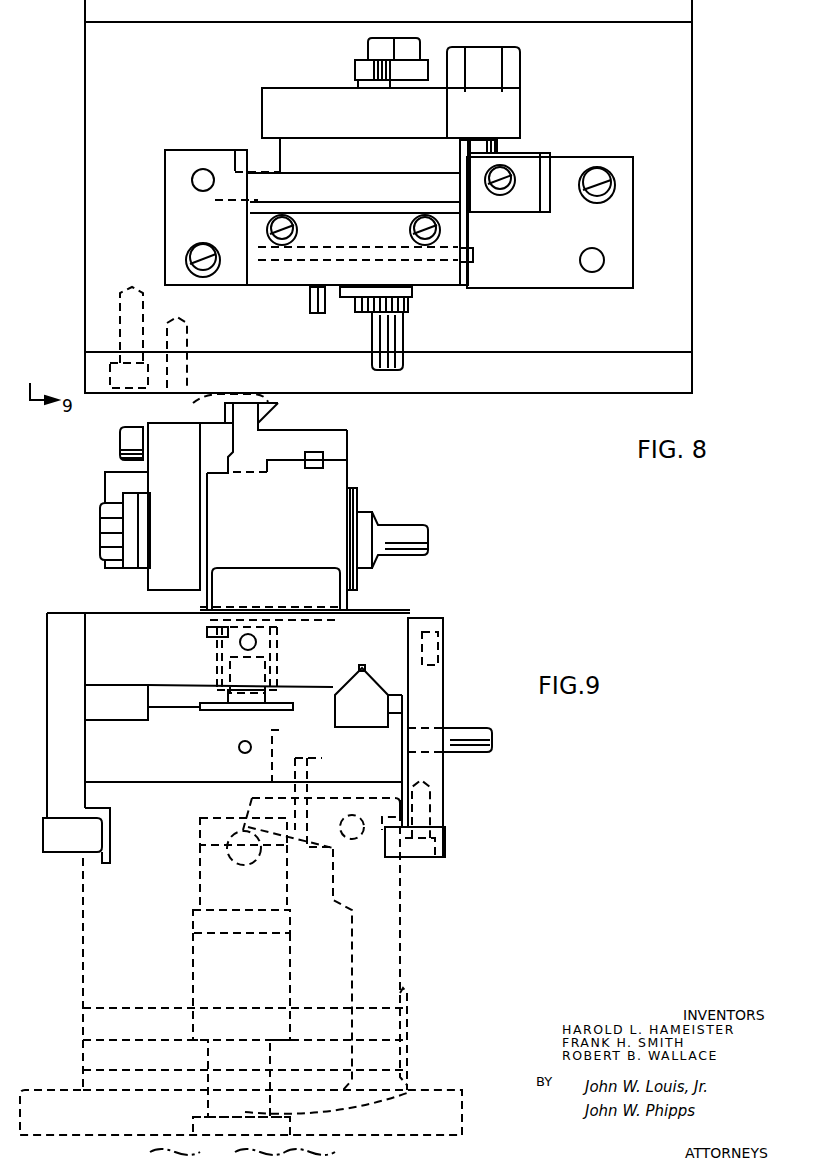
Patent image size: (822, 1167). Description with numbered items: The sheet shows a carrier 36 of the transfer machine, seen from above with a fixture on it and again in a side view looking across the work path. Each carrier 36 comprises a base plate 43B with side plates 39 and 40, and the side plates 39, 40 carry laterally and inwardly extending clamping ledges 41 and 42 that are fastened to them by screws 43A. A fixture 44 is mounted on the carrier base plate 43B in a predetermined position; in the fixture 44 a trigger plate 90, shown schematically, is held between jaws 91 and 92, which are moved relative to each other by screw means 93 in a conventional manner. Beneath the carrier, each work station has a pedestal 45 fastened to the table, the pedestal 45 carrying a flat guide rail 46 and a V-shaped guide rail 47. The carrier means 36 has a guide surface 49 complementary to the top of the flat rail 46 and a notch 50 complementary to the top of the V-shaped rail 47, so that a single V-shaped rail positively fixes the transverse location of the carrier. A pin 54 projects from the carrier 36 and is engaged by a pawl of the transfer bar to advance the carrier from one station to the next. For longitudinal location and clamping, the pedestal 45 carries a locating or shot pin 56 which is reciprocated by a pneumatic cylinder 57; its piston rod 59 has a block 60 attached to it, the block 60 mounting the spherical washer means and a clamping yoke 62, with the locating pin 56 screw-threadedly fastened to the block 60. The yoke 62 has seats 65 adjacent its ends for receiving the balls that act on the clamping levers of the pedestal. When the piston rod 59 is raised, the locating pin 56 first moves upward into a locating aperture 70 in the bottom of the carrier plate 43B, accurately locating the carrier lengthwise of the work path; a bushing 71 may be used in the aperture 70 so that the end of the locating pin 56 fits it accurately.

In FIG. 8, the carrier means 36 is at (700, 196).
In FIG. 9, the carrier means 36 is at (418, 606).
In FIG. 9, the side plate 39 is at (57, 637).
In FIG. 8, the side plate 40 is at (520, 394).
In FIG. 9, the side plate 40 is at (446, 696).
In FIG. 9, the clamping ledge 41 is at (445, 857).
In FIG. 9, the clamping ledge 42 is at (62, 850).
In FIG. 9, the screws 43A is at (422, 812).
In FIG. 8, the carrier base plate 43B is at (692, 327).
In FIG. 9, the carrier base plate 43B is at (358, 616).
In FIG. 8, the fixture 44 is at (548, 150).
In FIG. 9, the fixture 44 is at (335, 478).
In FIG. 9, the pedestal 45 is at (390, 967).
In FIG. 9, the flat guide rail 46 is at (95, 703).
In FIG. 9, the V-shaped guide rail 47 is at (376, 691).
In FIG. 9, the guide surface 49 is at (107, 686).
In FIG. 9, the notch 50 is at (378, 658).
In FIG. 9, the pin 54 is at (483, 735).
In FIG. 9, the locating pin 56 is at (258, 673).
In FIG. 9, the pneumatic cylinder 57 is at (147, 1133).
In FIG. 9, the piston rod 59 is at (420, 1090).
In FIG. 9, the block 60 is at (277, 960).
In FIG. 9, the clamping yoke 62 is at (205, 887).
In FIG. 9, the seats 65 is at (200, 856).
In FIG. 9, the locating aperture 70 is at (207, 632).
In FIG. 9, the bushing 71 is at (272, 650).
In FIG. 8, the trigger plate 90 is at (235, 145).
In FIG. 9, the trigger plate 90 is at (215, 432).
In FIG. 8, the jaw 91 is at (330, 165).
In FIG. 9, the jaw 91 is at (165, 427).
In FIG. 8, the jaw 92 is at (262, 207).
In FIG. 9, the jaw 92 is at (275, 420).
In FIG. 8, the screw means 93 is at (405, 342).
In FIG. 9, the screw means 93 is at (433, 535).